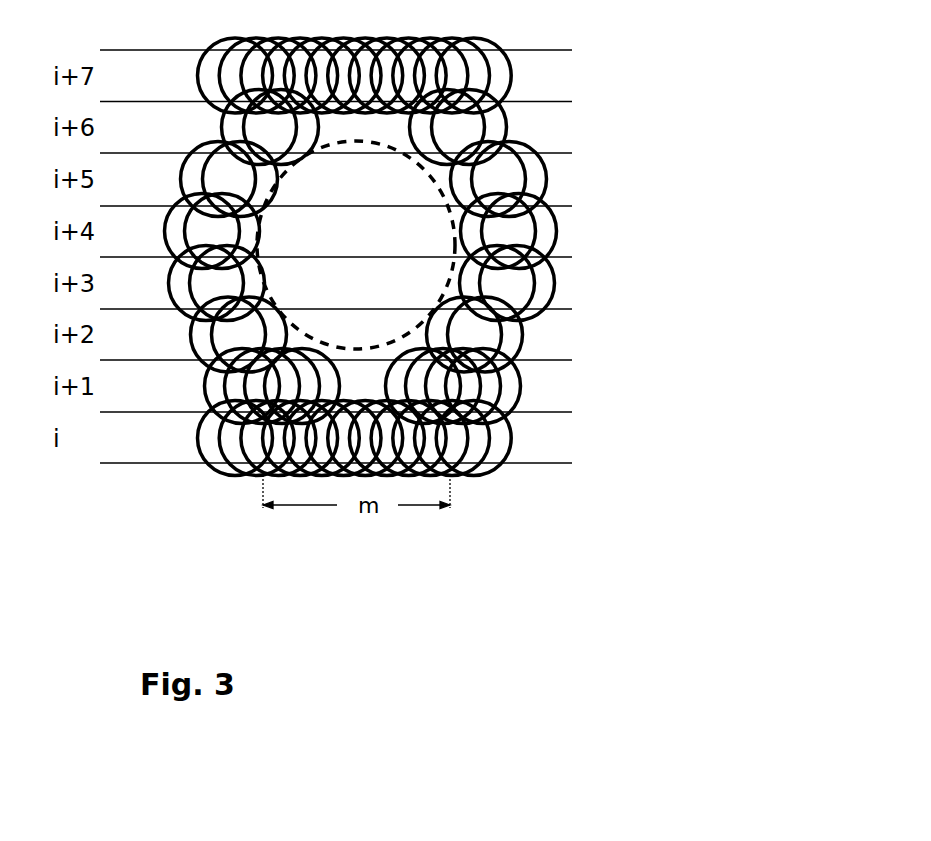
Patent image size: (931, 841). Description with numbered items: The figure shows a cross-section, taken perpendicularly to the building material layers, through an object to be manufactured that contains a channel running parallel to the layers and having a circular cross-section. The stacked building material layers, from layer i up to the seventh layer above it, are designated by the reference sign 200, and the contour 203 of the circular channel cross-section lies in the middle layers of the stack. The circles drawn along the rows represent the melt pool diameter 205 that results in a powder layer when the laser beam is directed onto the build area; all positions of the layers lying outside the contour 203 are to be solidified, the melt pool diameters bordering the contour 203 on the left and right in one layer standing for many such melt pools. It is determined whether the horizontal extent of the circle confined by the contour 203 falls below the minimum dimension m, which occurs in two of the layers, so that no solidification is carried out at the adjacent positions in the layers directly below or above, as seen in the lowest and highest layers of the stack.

The building material layers 200 is at (535, 84).
The contour 203 is at (392, 145).
The melt pool diameter 205 is at (500, 333).